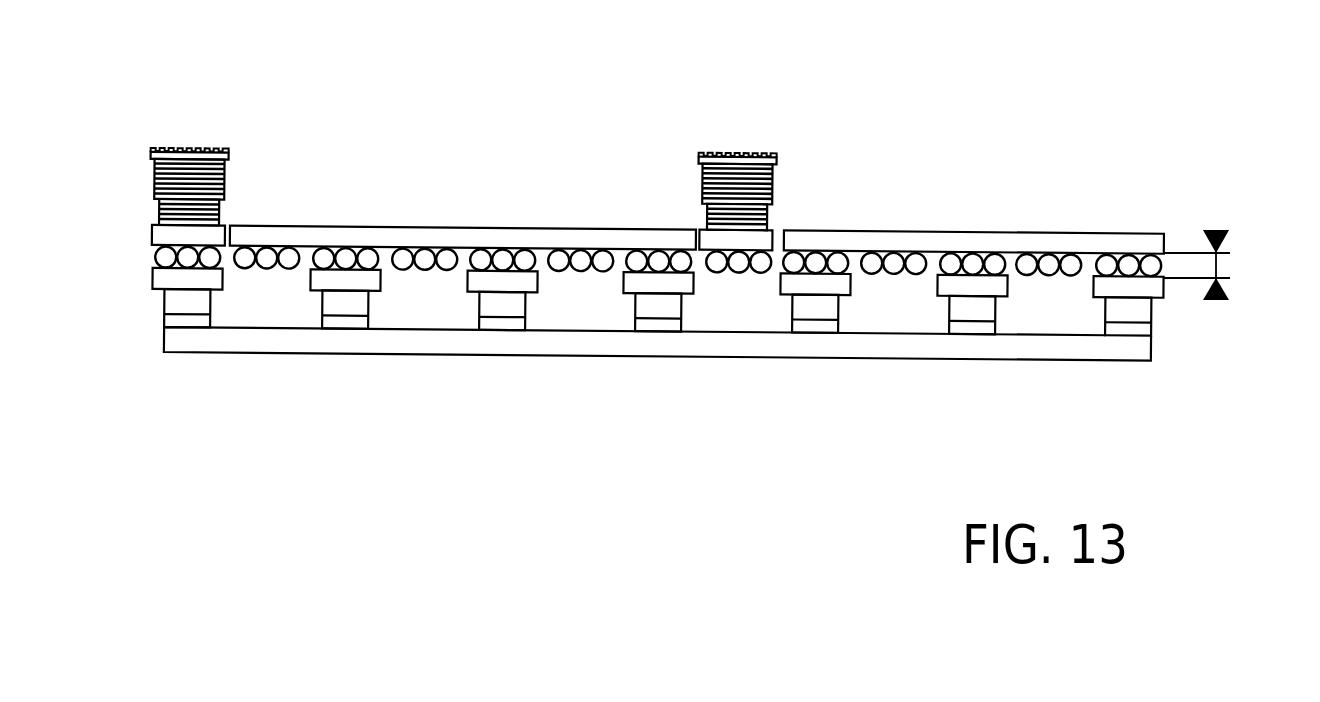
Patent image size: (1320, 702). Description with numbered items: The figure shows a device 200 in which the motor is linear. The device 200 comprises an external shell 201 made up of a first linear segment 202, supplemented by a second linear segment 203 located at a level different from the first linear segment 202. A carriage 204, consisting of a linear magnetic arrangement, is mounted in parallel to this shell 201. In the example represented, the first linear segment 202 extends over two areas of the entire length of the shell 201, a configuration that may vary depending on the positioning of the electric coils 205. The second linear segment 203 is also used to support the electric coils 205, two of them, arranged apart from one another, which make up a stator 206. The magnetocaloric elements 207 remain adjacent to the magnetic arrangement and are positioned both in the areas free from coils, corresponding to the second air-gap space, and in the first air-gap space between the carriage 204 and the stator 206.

The device 200 is at (1063, 124).
The external shell 201 is at (548, 172).
The first linear segment 202 is at (358, 233).
The second linear segment 203 is at (205, 150).
The carriage 204 is at (1166, 353).
The electric coils 205 is at (222, 186).
The stator 206 is at (490, 167).
The magnetocaloric elements 207 is at (836, 258).